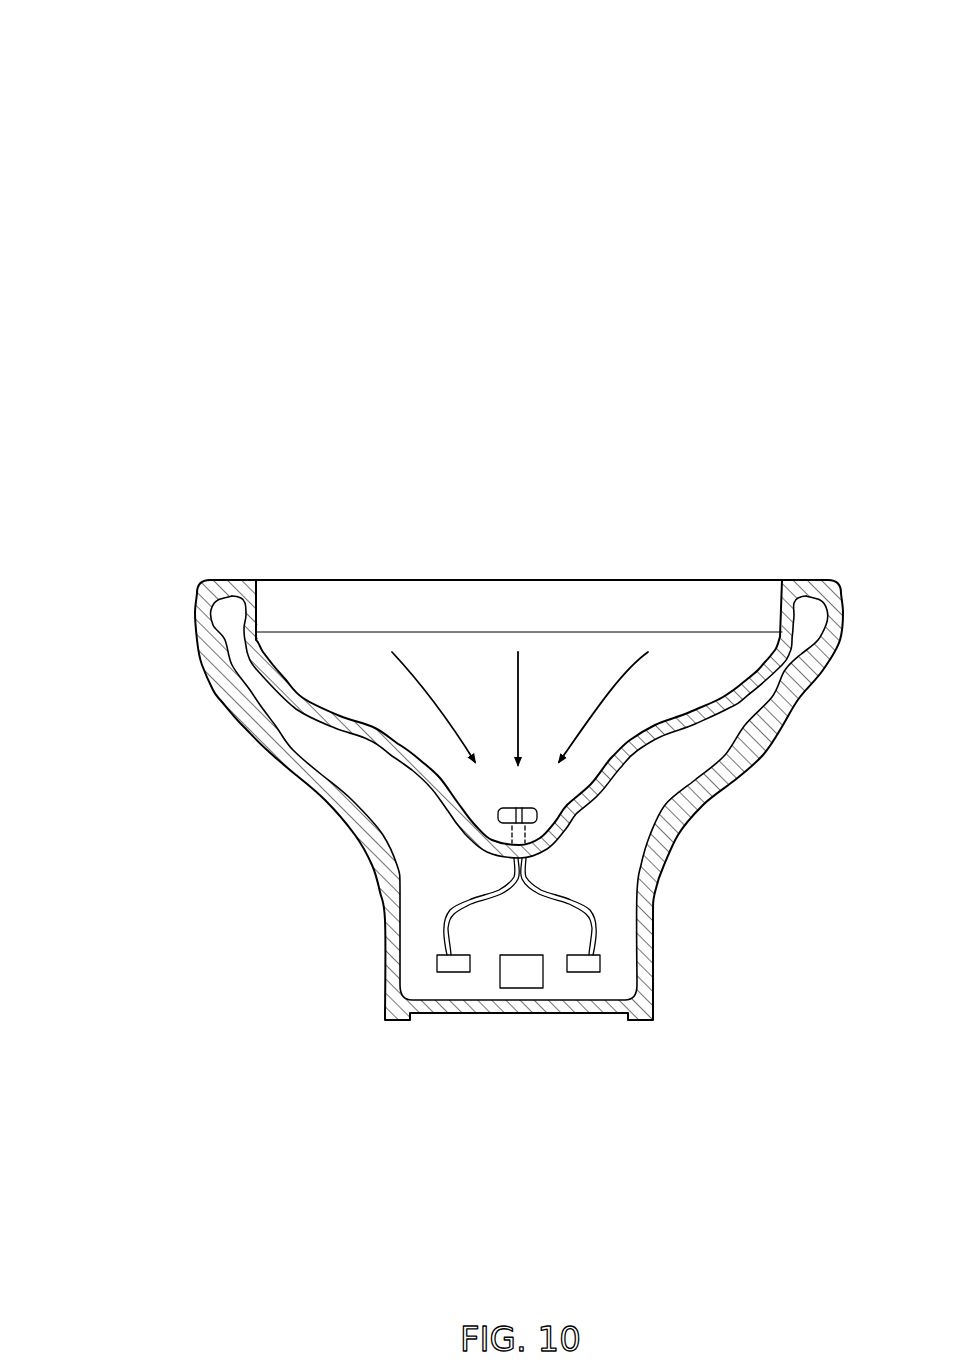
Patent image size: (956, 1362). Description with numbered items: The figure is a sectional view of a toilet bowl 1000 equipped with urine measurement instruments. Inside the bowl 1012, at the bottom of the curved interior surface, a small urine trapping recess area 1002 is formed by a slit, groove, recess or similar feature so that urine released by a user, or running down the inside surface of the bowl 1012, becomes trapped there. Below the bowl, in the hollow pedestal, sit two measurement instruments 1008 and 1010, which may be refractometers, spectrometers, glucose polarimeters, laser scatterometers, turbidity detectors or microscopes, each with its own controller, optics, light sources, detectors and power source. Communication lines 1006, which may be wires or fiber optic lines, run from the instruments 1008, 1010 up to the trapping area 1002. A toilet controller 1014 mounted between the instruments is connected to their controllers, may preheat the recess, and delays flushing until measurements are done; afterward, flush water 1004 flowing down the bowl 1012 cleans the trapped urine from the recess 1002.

The toilet bowl 1000 is at (156, 70).
The urine trapping recess area 1002 is at (528, 808).
The flush water 1004 is at (417, 673).
The communication lines 1006 is at (513, 877).
The measurement instrument 1008 is at (437, 966).
The measurement instrument 1010 is at (600, 966).
The toilet bowl 1012 is at (741, 683).
The toilet controller 1014 is at (521, 977).